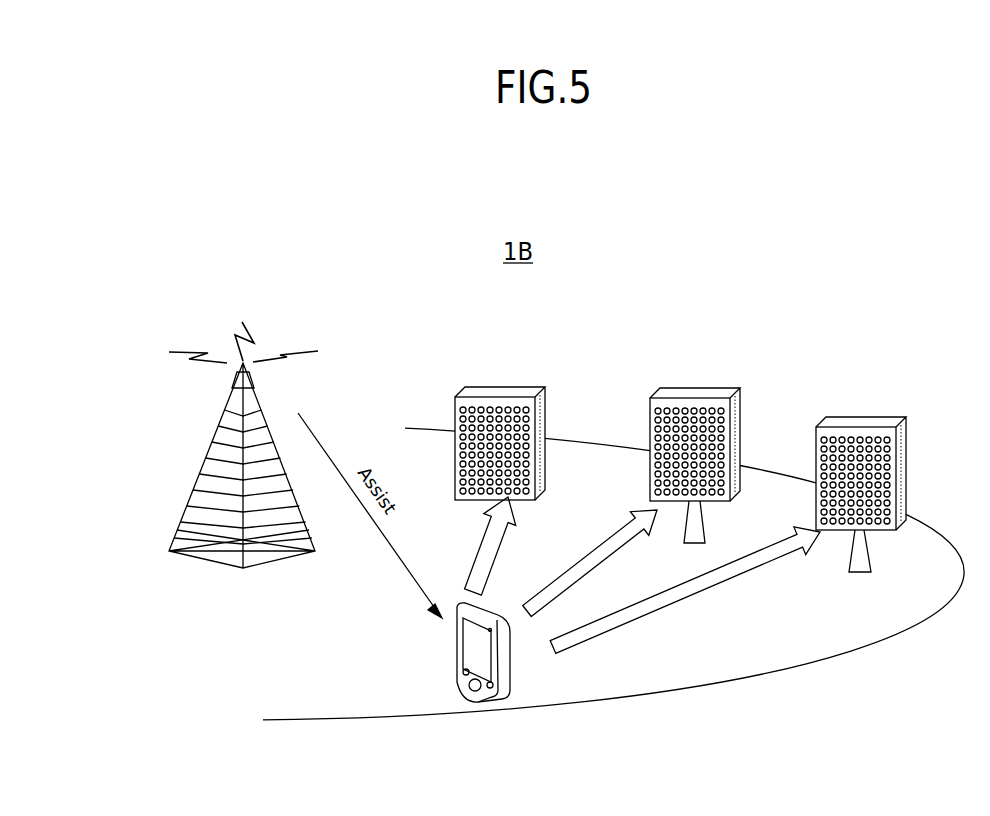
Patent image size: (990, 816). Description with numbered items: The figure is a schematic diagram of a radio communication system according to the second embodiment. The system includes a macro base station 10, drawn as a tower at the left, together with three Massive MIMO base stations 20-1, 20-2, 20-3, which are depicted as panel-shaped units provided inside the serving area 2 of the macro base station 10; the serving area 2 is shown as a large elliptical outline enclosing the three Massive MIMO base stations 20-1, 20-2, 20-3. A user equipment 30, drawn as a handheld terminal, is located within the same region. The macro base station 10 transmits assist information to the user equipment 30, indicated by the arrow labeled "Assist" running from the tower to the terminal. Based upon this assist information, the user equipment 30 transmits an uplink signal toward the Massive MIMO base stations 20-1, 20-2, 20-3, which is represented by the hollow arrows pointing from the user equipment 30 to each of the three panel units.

The macro base station 10 is at (190, 500).
The Massive MIMO base station 20-1 is at (519, 388).
The Massive MIMO base station 20-2 is at (690, 388).
The Massive MIMO base station 20-3 is at (860, 417).
The user equipment 30 is at (512, 668).
The serving area 2 is at (797, 667).